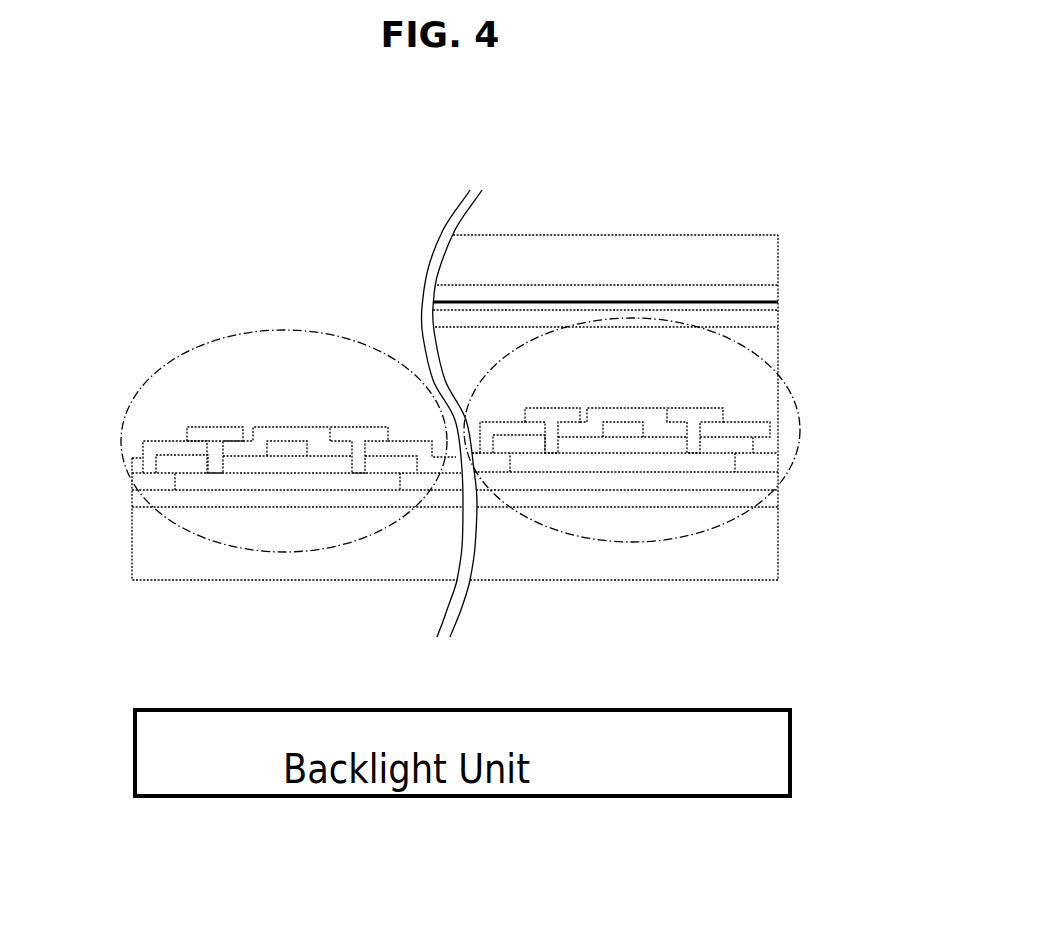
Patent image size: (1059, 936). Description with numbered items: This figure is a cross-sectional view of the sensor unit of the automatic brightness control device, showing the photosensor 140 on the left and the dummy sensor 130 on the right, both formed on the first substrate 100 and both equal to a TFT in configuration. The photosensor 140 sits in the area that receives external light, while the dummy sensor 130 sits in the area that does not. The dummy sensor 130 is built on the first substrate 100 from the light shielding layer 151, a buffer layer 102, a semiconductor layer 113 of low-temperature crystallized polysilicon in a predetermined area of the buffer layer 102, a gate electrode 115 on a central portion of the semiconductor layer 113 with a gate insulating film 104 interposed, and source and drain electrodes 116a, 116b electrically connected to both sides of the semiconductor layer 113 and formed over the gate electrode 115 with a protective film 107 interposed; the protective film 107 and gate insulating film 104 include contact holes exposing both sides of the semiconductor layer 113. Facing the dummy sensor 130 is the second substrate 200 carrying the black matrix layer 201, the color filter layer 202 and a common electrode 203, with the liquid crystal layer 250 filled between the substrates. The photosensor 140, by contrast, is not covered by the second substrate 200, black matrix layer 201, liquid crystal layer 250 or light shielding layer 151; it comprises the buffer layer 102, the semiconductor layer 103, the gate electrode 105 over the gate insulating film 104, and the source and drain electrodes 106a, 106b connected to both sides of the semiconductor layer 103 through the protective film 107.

The first substrate 100 is at (142, 548).
The buffer layer 102 is at (130, 498).
The semiconductor layer 103 is at (190, 473).
The gate insulating film 104 is at (130, 473).
The gate electrode 105 is at (287, 441).
The source electrode 106a is at (215, 430).
The drain electrode 106b is at (360, 427).
The protective film 107 is at (141, 462).
The semiconductor layer 113 is at (722, 462).
The gate electrode 115 is at (635, 422).
The source electrode 116a is at (553, 408).
The drain electrode 116b is at (698, 408).
The dummy sensor 130 is at (628, 541).
The photosensor 140 is at (295, 553).
The light shielding layer 151 is at (778, 508).
The second substrate 200 is at (768, 258).
The black matrix layer 201 is at (768, 294).
The color filter layer 202 is at (688, 302).
The common electrode 203 is at (768, 315).
The liquid crystal layer 250 is at (768, 346).